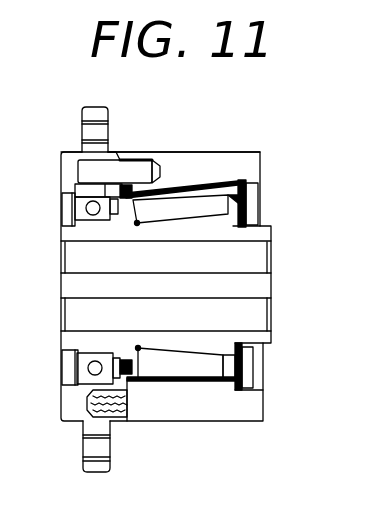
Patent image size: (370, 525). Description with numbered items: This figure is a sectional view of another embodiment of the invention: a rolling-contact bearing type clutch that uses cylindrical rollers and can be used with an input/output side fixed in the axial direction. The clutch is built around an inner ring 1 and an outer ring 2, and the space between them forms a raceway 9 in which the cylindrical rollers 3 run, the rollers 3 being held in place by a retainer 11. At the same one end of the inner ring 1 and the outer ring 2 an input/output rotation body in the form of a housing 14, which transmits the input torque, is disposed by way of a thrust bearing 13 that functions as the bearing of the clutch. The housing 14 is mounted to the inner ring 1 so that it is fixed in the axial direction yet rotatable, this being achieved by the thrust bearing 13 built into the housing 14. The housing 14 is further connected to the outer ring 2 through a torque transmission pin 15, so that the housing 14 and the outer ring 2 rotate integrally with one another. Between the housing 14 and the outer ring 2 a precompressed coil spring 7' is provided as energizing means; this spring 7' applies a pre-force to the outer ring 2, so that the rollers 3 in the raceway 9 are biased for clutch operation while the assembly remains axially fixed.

The inner ring 1 is at (256, 236).
The outer ring 2 is at (233, 161).
The cylindrical rollers 3 is at (210, 379).
The coil spring 7' is at (130, 438).
The raceway 9 is at (259, 184).
The retainer 11 is at (232, 386).
The thrust bearing 13 is at (91, 203).
The housing 14 is at (66, 182).
The torque transmission pin 15 is at (112, 163).